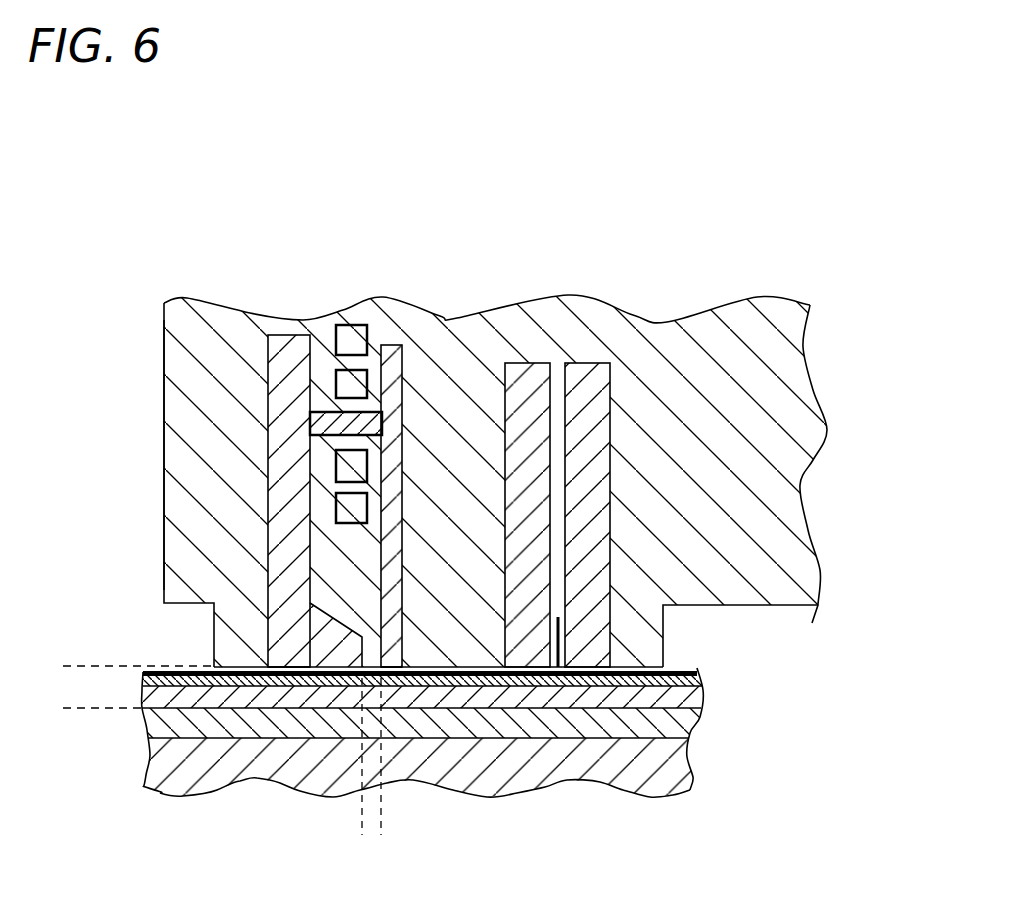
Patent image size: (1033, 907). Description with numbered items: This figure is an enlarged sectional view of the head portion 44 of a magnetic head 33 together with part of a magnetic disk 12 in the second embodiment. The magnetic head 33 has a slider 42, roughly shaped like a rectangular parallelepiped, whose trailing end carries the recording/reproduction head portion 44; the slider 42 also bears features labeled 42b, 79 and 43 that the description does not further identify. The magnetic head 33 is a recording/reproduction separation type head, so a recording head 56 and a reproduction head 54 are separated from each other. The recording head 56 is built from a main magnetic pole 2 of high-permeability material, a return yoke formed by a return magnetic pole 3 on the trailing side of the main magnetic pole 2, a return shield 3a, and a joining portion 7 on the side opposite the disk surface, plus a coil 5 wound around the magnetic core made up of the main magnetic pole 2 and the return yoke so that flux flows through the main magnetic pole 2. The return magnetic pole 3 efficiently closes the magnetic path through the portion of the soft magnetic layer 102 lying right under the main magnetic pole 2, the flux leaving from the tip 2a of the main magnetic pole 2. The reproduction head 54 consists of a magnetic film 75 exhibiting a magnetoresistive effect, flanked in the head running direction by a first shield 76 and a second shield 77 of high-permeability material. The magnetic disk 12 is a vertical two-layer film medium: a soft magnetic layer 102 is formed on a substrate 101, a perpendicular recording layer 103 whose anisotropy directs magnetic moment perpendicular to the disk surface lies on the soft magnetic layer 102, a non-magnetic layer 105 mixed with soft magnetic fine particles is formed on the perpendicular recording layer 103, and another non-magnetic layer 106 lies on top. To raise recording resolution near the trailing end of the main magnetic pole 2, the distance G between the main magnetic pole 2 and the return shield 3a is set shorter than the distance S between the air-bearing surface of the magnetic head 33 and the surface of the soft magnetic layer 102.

The slider 42 is at (750, 298).
The side face of body 42b is at (162, 398).
The protrusion of body 79 is at (222, 333).
The step portion of body 43 is at (773, 605).
The magnetic head 33 is at (663, 286).
The recording/reproduction head portion 44 is at (531, 270).
The recording head 56 is at (260, 392).
The coil 5 is at (337, 510).
The joining portion 7 is at (320, 420).
The return magnetic pole 3 is at (282, 470).
The return shield 3a is at (295, 648).
The main magnetic pole 2 is at (392, 540).
The tip of the main magnetic pole 2a is at (392, 648).
The reproduction head 54 is at (615, 368).
The magnetic film 75 is at (560, 633).
The first shield 76 is at (503, 417).
The second shield 77 is at (610, 418).
The magnetic disk 12 is at (494, 723).
The substrate 101 is at (461, 770).
The soft magnetic layer 102 is at (680, 724).
The perpendicular recording layer 103 is at (697, 697).
The non-magnetic layer mixed with soft magnetic fine particles 105 is at (700, 682).
The non-magnetic layer 106 is at (697, 670).
The distance S is at (108, 666).
The distance G is at (315, 847).